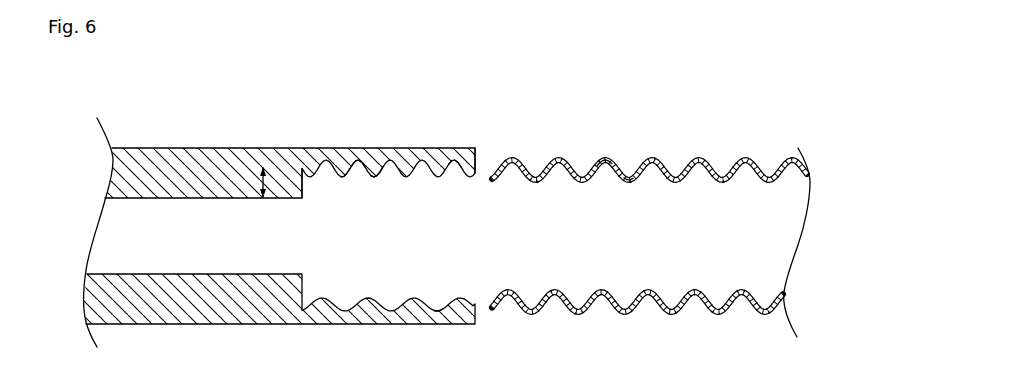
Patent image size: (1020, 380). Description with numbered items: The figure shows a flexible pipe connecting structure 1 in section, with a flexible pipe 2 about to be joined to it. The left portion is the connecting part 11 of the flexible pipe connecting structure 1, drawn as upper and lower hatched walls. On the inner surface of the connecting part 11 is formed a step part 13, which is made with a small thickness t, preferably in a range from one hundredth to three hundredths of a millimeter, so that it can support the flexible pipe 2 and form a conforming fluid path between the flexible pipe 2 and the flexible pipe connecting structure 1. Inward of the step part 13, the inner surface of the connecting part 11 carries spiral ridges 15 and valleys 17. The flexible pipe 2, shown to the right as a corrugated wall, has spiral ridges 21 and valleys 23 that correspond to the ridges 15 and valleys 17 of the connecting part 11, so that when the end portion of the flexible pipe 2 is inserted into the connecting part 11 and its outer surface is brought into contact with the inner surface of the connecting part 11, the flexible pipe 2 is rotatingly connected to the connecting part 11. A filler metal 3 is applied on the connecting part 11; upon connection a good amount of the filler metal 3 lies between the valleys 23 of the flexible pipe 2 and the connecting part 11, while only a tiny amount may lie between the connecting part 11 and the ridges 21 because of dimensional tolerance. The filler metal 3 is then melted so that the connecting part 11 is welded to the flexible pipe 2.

The flexible pipe connecting structure 1 is at (159, 141).
The thickness t is at (260, 172).
The step part 13 is at (297, 178).
The valleys 17 is at (351, 154).
The spiral ridges 15 is at (381, 172).
The connecting part 11 is at (434, 152).
The flexible pipe 2 is at (716, 161).
The spiral ridges 21 is at (604, 160).
The valleys 23 is at (628, 171).
The filler metal 3 is at (455, 165).